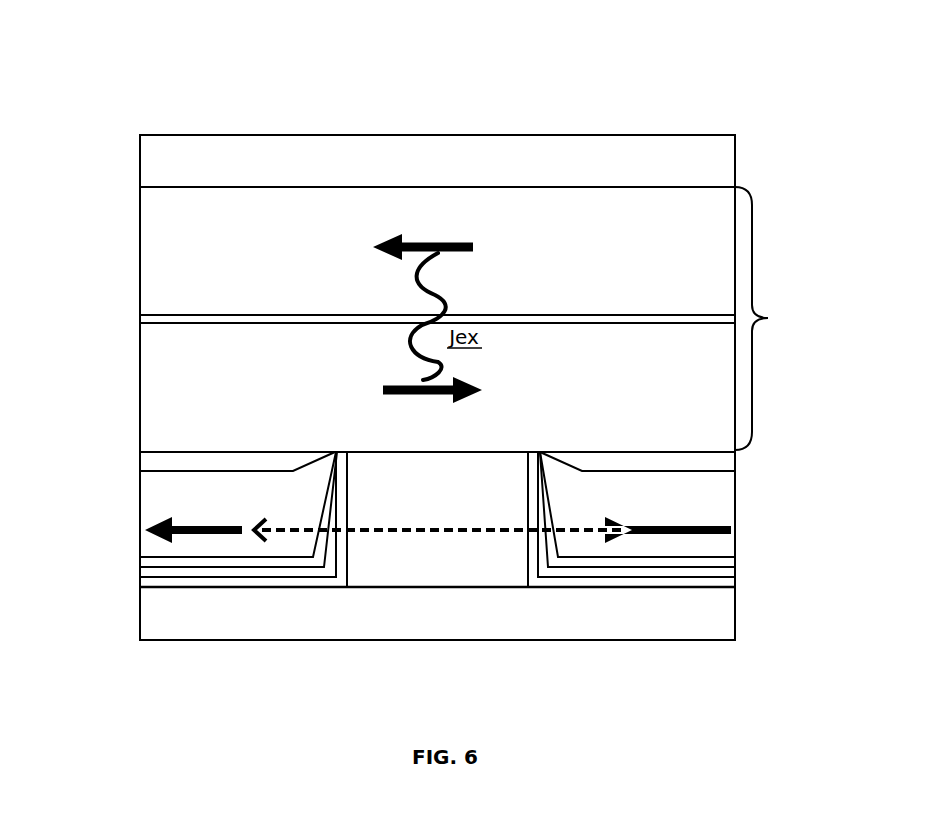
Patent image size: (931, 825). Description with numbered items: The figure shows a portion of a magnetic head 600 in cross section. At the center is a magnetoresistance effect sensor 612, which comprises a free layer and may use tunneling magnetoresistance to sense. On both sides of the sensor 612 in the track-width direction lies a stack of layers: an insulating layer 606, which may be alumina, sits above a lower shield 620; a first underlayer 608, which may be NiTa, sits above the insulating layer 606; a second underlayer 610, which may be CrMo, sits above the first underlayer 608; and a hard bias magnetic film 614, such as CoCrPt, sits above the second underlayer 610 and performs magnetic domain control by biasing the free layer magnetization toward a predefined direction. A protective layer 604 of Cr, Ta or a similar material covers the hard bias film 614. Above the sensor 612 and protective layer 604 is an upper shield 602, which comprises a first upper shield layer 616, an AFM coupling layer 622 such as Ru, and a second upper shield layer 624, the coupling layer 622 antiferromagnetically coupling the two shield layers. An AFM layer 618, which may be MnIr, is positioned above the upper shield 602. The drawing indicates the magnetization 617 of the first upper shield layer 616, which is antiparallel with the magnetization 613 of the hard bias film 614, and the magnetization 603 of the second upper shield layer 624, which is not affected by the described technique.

The magnetic head 600 is at (98, 119).
The upper shield 602 is at (778, 318).
The magnetization of the second upper shield layer 603 is at (436, 243).
The protective layer 604 is at (150, 461).
The insulating layer 606 is at (145, 582).
The first underlayer 608 is at (150, 568).
The second underlayer 610 is at (150, 557).
The magnetoresistance effect sensor 612 is at (412, 501).
The magnetization of the hard bias magnetic film 613 is at (208, 535).
The hard bias magnetic film 614 is at (150, 500).
The first upper shield layer 616 is at (208, 393).
The magnetization of the first upper shield layer 617 is at (403, 395).
The AFM layer 618 is at (424, 173).
The lower shield 620 is at (424, 624).
The AFM coupling layer 622 is at (157, 317).
The second upper shield layer 624 is at (208, 258).